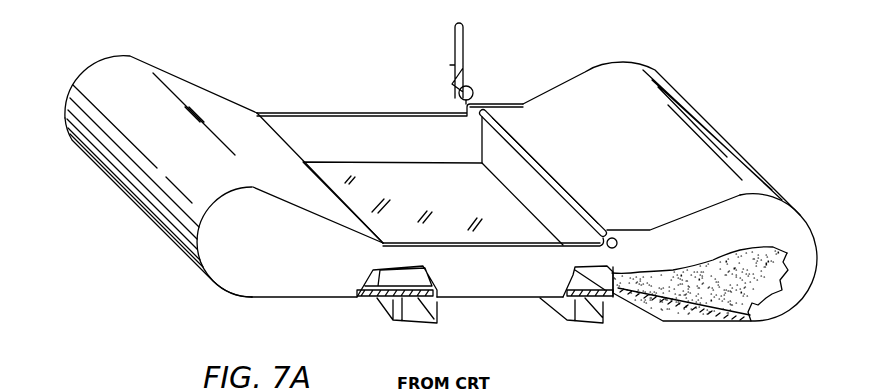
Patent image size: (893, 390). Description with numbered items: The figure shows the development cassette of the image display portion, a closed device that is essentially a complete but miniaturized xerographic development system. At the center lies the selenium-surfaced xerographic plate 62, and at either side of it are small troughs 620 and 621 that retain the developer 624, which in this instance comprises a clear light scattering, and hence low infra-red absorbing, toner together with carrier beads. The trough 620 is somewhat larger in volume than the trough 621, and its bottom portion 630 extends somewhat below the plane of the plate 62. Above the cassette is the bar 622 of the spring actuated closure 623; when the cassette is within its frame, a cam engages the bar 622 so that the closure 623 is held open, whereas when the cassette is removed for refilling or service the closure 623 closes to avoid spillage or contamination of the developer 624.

The xerographic plate 62 is at (402, 182).
The trough 620 is at (788, 298).
The trough 621 is at (250, 282).
The bar 622 is at (465, 40).
The spring actuated closure 623 is at (520, 182).
The developer 624 is at (651, 298).
The bottom portion 630 is at (713, 319).